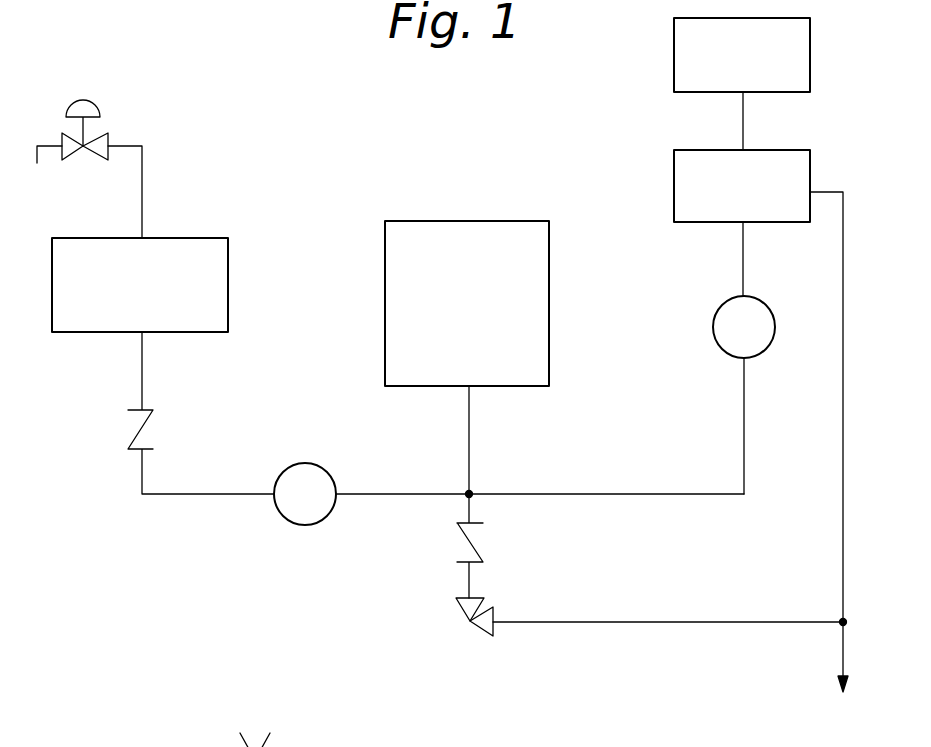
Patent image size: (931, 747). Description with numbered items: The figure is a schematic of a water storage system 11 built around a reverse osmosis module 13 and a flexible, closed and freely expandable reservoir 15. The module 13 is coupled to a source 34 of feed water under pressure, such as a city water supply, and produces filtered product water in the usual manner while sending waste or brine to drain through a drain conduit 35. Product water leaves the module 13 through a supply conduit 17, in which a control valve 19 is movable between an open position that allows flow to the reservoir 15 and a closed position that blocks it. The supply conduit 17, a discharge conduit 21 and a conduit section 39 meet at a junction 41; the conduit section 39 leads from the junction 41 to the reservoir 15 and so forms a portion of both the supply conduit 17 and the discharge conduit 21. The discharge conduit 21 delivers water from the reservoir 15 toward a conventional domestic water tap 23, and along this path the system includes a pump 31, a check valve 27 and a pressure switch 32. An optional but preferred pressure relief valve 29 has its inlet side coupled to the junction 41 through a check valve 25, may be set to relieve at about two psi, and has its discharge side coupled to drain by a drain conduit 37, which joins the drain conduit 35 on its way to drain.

The water storage system 11 is at (319, 118).
The reverse osmosis module 13 is at (674, 150).
The reservoir 15 is at (521, 221).
The supply conduit 17 is at (744, 437).
The control valve 19 is at (715, 322).
The discharge conduit 21 is at (353, 492).
The domestic water tap 23 is at (98, 105).
The check valve 25 is at (482, 538).
The check valve 27 is at (147, 438).
The pressure relief valve 29 is at (466, 623).
The pump 31 is at (282, 512).
The pressure switch 32 is at (228, 283).
The source 34 is at (674, 60).
The drain conduit 35 is at (841, 453).
The drain conduit 37 is at (660, 623).
The conduit section 39 is at (469, 440).
The junction 41 is at (470, 493).